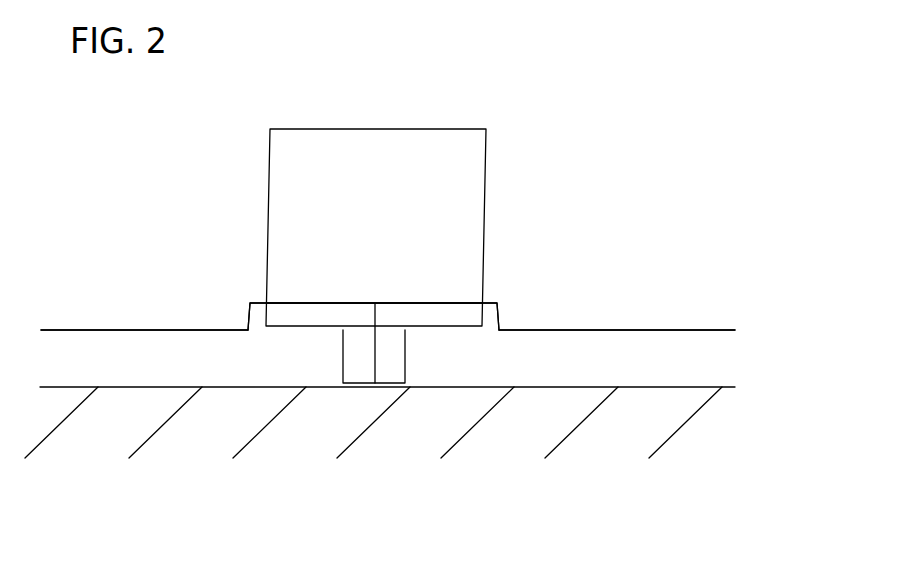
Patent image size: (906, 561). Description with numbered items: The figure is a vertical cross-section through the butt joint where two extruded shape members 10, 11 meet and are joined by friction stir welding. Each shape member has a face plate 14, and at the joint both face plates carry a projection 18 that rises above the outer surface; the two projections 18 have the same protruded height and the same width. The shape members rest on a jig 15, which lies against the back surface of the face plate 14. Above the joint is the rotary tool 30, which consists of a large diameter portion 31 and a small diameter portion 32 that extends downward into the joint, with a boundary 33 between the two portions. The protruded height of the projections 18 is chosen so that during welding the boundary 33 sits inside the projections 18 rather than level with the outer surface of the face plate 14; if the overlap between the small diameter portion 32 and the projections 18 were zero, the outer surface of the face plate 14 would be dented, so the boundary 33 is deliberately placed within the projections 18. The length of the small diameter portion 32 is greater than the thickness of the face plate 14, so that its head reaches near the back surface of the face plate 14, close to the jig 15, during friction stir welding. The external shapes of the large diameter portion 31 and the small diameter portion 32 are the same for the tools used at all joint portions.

The shape member 10 is at (410, 229).
The shape member 11 is at (174, 316).
The face plate 14 is at (79, 328).
The jig 15 is at (313, 437).
The projection 18 is at (308, 300).
The rotary tool 30 is at (424, 199).
The large diameter portion 31 is at (460, 192).
The small diameter portion 32 is at (405, 363).
The boundary 33 is at (428, 322).